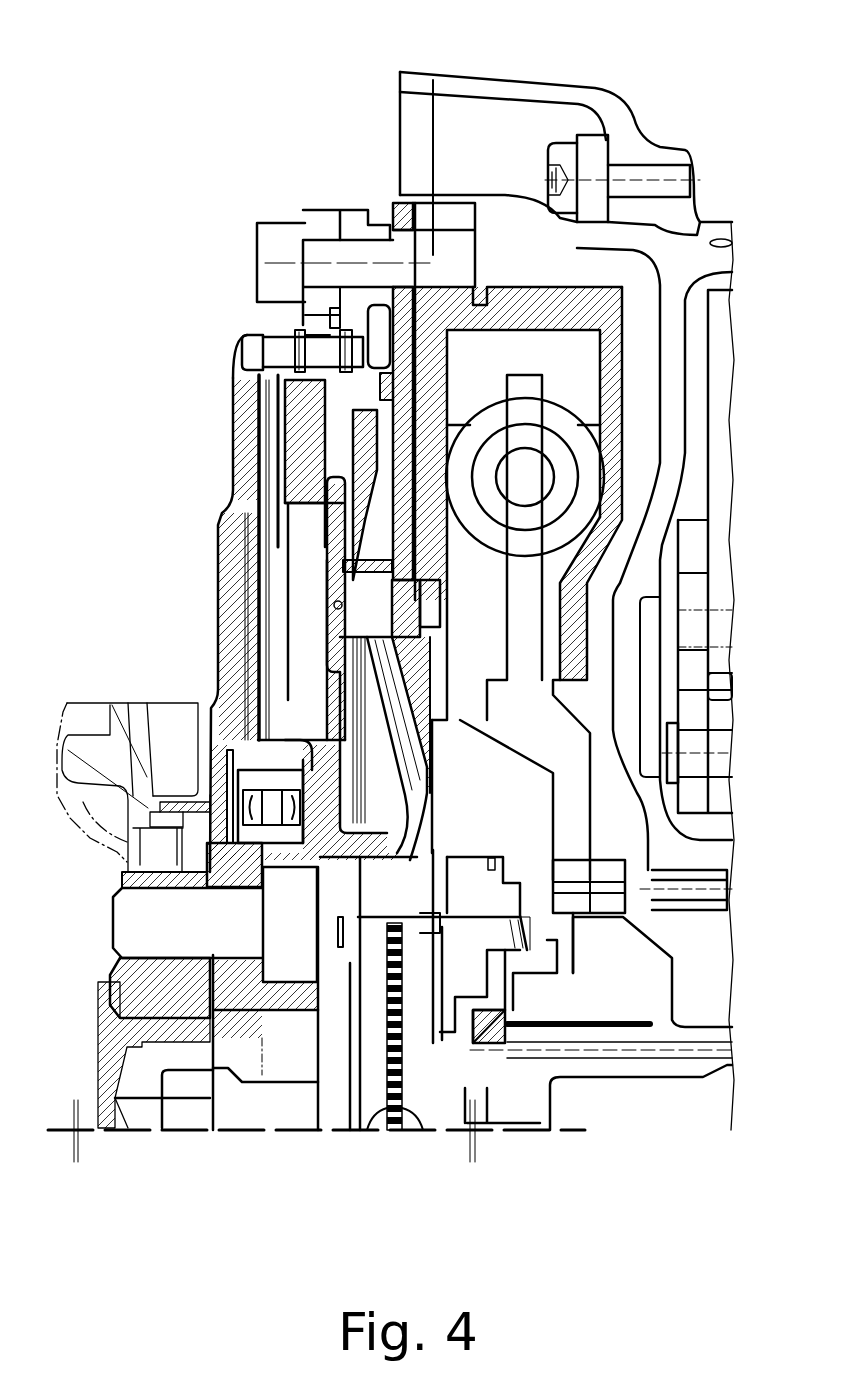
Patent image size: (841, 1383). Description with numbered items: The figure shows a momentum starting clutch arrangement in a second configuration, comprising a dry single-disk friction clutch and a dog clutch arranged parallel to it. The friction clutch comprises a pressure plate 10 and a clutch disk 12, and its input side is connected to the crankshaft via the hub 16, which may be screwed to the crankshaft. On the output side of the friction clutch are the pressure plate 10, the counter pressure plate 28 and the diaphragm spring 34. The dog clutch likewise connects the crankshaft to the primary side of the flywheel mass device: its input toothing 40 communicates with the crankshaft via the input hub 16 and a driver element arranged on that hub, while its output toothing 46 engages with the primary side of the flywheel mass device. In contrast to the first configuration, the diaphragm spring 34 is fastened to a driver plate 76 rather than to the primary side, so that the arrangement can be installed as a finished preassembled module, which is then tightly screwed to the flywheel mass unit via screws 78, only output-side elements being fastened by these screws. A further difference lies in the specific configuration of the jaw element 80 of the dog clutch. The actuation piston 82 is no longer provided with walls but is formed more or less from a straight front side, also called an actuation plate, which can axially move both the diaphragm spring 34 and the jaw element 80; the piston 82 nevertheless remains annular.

The pressure plate 10 is at (317, 440).
The clutch disk 12 is at (210, 370).
The hub 16 is at (231, 987).
The counter pressure plate 28 is at (258, 417).
The diaphragm spring 34 is at (365, 435).
The input toothing 40 is at (400, 865).
The output toothing 46 is at (420, 890).
The driver plate 76 is at (400, 332).
The screws 78 is at (328, 255).
The jaw element 80 is at (380, 898).
The actuation piston 82 is at (474, 893).